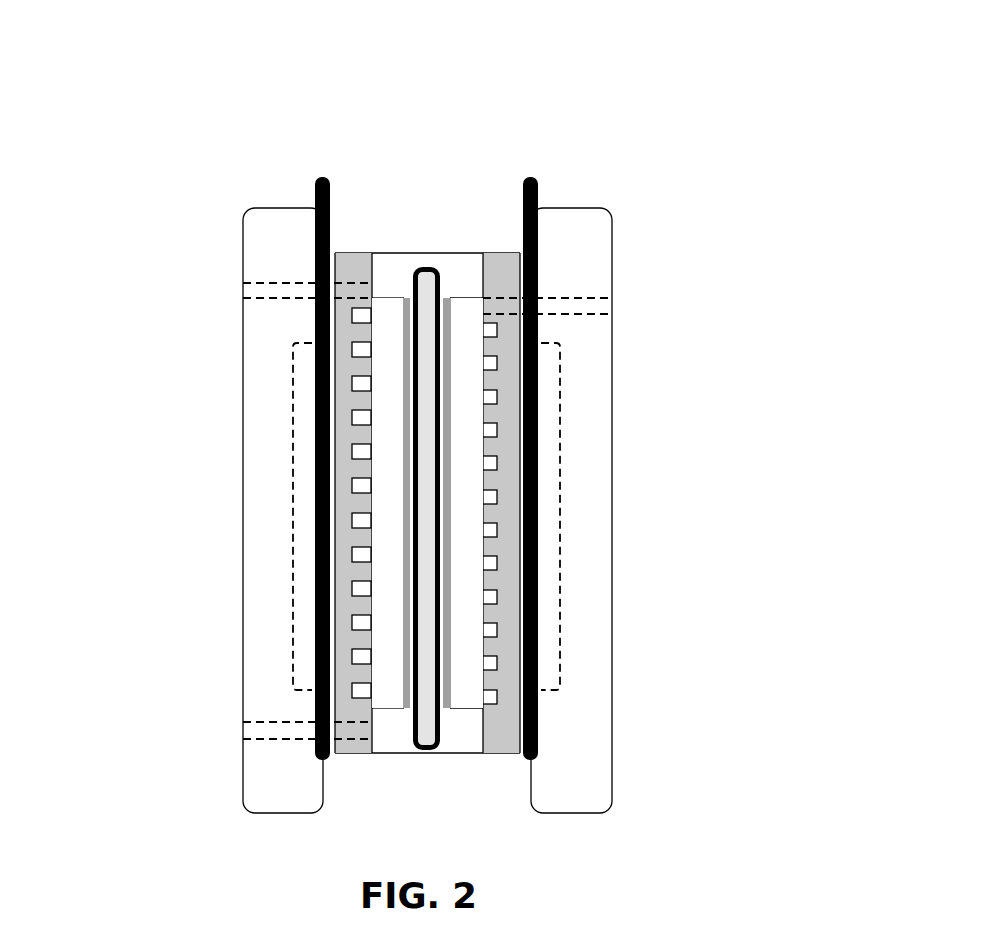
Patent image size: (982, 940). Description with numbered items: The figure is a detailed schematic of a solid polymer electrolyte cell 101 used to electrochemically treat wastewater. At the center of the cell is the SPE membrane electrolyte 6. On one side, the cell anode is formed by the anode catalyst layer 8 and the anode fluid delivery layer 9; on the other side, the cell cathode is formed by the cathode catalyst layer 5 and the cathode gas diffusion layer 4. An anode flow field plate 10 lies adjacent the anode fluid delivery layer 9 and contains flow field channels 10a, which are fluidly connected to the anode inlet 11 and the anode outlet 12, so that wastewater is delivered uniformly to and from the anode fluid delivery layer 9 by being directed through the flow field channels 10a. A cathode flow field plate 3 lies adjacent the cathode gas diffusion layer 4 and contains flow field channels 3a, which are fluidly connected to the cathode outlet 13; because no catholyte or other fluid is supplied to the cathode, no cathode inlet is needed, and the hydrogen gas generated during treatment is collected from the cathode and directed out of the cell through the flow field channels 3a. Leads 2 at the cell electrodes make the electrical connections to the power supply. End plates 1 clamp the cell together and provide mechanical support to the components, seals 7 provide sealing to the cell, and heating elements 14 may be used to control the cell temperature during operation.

The solid polymer electrolyte cell 101 is at (741, 104).
The end plates 1 is at (275, 238).
The leads 2 is at (315, 193).
The cathode flow field plate 3 is at (500, 284).
The flow field channels 3a is at (497, 561).
The cathode gas diffusion layer 4 is at (472, 378).
The cathode catalyst layer 5 is at (451, 425).
The SPE membrane electrolyte 6 is at (425, 685).
The seals 7 is at (403, 269).
The anode catalyst layer 8 is at (409, 637).
The anode fluid delivery layer 9 is at (388, 570).
The anode flow field plate 10 is at (355, 709).
The flow field channels 10a is at (352, 417).
The anode inlet 11 is at (283, 297).
The anode outlet 12 is at (283, 731).
The cathode outlet 13 is at (575, 308).
The heating elements 14 is at (310, 480).